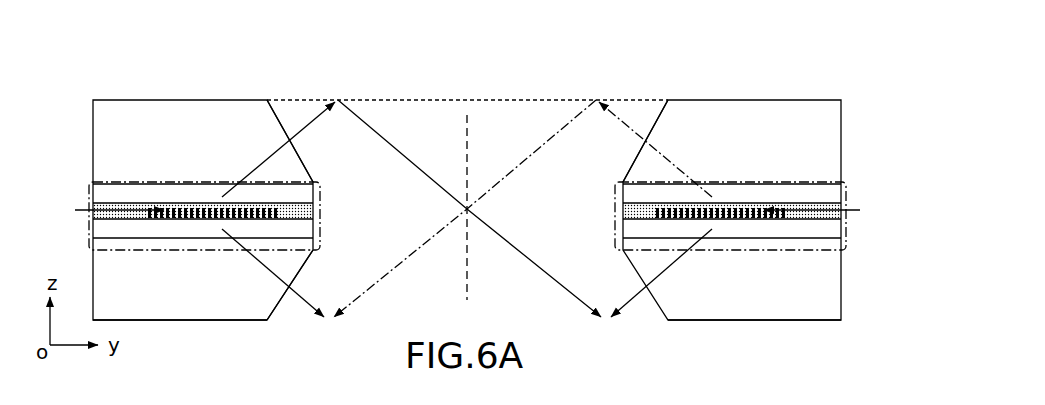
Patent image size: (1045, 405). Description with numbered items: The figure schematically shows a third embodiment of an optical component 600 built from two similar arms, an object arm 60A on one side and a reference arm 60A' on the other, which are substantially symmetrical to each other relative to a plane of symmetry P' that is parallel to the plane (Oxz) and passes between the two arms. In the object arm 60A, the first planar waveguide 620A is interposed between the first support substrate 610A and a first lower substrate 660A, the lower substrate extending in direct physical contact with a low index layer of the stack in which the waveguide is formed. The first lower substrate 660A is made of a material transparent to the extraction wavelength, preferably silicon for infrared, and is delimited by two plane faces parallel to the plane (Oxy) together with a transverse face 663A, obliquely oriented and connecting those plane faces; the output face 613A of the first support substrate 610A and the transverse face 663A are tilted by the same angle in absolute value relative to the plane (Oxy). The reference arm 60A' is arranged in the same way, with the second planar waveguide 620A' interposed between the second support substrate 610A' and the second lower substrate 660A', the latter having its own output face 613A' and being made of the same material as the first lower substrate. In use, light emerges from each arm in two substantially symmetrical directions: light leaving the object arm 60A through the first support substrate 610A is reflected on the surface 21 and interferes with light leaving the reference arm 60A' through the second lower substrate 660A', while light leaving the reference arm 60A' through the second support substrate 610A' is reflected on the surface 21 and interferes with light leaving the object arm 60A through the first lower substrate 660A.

The optical component 600 is at (244, 64).
The surface 21 is at (495, 100).
The plane of symmetry P' is at (444, 177).
The object arm 60A is at (183, 194).
The first support substrate 610A is at (203, 182).
The output face 613A is at (302, 113).
The transverse face 663A is at (277, 308).
The first lower substrate 660A is at (180, 333).
The first planar waveguide 620A is at (175, 193).
The reference arm 60A' is at (783, 191).
The second support substrate 610A' is at (781, 210).
The output face of second support substrate 613A' is at (655, 113).
The second lower substrate 660A' is at (754, 334).
The second planar waveguide 620A' is at (783, 209).